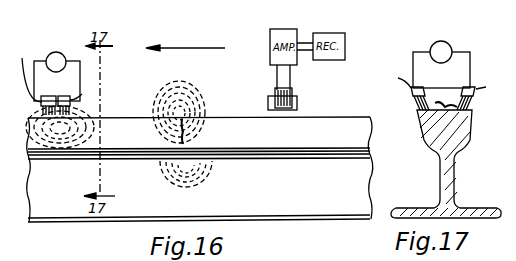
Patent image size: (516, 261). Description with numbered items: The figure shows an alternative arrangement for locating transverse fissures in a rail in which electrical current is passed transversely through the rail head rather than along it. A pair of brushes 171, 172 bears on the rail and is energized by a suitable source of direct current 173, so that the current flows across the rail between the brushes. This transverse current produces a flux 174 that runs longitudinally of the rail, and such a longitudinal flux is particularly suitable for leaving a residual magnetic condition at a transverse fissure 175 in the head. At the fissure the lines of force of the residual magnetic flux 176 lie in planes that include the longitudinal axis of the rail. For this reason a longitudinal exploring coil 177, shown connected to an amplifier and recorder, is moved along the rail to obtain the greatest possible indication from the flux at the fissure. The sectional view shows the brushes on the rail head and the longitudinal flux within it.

In FIG. 16, the brush 171 is at (26, 70).
In FIG. 17, the brush 171 is at (391, 78).
In FIG. 16, the brush 172 is at (82, 94).
In FIG. 17, the brush 172 is at (494, 87).
In FIG. 16, the source of direct current 173 is at (56, 50).
In FIG. 17, the source of direct current 173 is at (446, 42).
In FIG. 16, the flux 174 is at (78, 128).
In FIG. 17, the flux 174 is at (445, 100).
In FIG. 16, the transverse fissure 175 is at (188, 128).
In FIG. 16, the residual magnetic flux 176 is at (188, 98).
In FIG. 16, the longitudinal exploring coil 177 is at (297, 101).